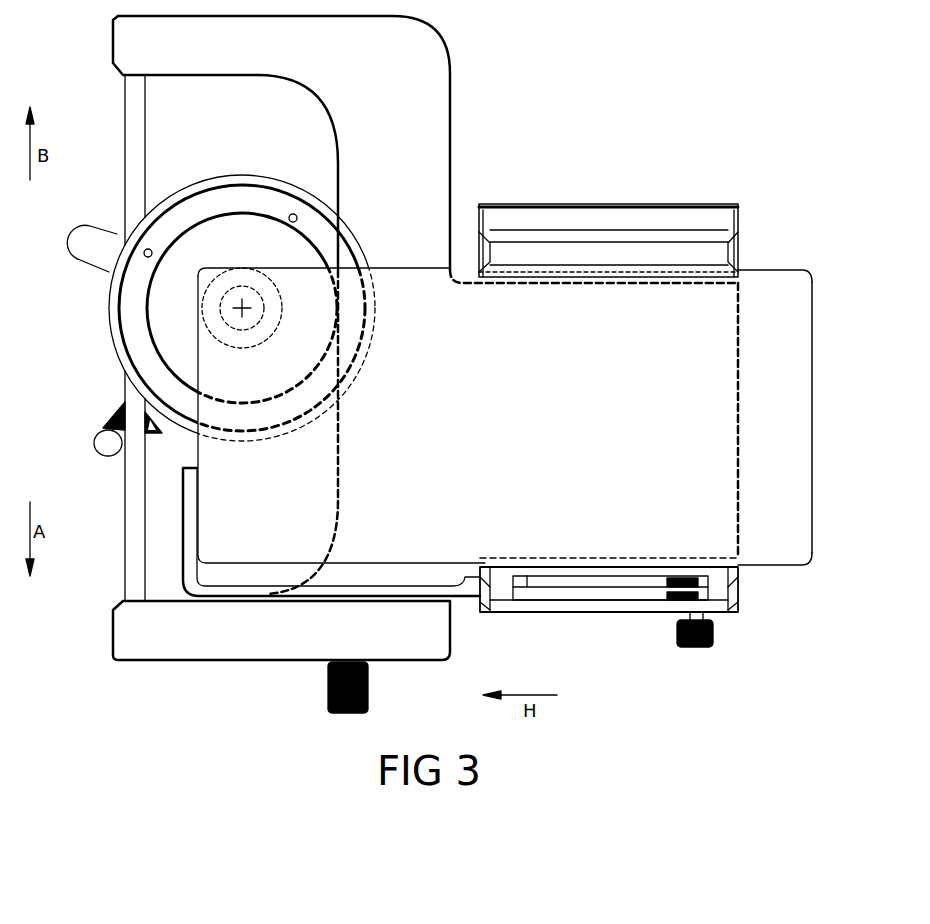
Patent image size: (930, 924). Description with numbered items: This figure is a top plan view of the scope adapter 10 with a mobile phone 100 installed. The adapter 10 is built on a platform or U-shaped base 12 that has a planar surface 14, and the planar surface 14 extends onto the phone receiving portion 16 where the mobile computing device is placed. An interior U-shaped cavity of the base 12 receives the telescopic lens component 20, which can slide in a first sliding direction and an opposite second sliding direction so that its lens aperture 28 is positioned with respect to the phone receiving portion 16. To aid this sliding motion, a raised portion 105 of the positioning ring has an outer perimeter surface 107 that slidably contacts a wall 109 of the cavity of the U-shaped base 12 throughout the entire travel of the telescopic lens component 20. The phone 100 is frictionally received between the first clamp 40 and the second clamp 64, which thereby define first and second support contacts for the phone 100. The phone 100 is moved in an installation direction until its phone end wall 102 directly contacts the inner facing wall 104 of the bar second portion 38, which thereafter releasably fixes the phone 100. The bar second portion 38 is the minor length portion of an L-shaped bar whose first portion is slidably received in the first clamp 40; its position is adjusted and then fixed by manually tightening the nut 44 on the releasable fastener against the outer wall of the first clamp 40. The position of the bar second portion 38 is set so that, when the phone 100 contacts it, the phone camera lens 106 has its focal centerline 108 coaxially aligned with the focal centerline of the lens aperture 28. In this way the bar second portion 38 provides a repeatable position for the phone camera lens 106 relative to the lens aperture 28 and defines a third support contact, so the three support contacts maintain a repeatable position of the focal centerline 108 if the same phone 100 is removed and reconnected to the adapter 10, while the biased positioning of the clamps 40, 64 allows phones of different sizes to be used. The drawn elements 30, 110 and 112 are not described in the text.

The adapter 10 is at (628, 160).
The U-shaped base 12 is at (417, 50).
The planar surface 14 is at (408, 575).
The phone receiving portion 16 is at (467, 568).
The telescopic lens component 20 is at (98, 312).
The lens aperture 28 is at (200, 266).
The foot 30 is at (343, 713).
The bar second portion 38 is at (190, 532).
The first clamp 40 is at (720, 584).
The nut 44 is at (697, 647).
The second clamp 64 is at (722, 250).
The mobile phone 100 is at (767, 270).
The phone end wall 102 is at (187, 452).
The inner facing wall 104 is at (208, 508).
The raised portion 105 is at (228, 222).
The outer perimeter surface 107 is at (202, 203).
The phone camera lens 106 is at (243, 287).
The focal centerline 108 is at (242, 310).
The wall 109 is at (328, 173).
The lower cover edge 110 is at (770, 565).
The upper cover edge 112 is at (780, 270).